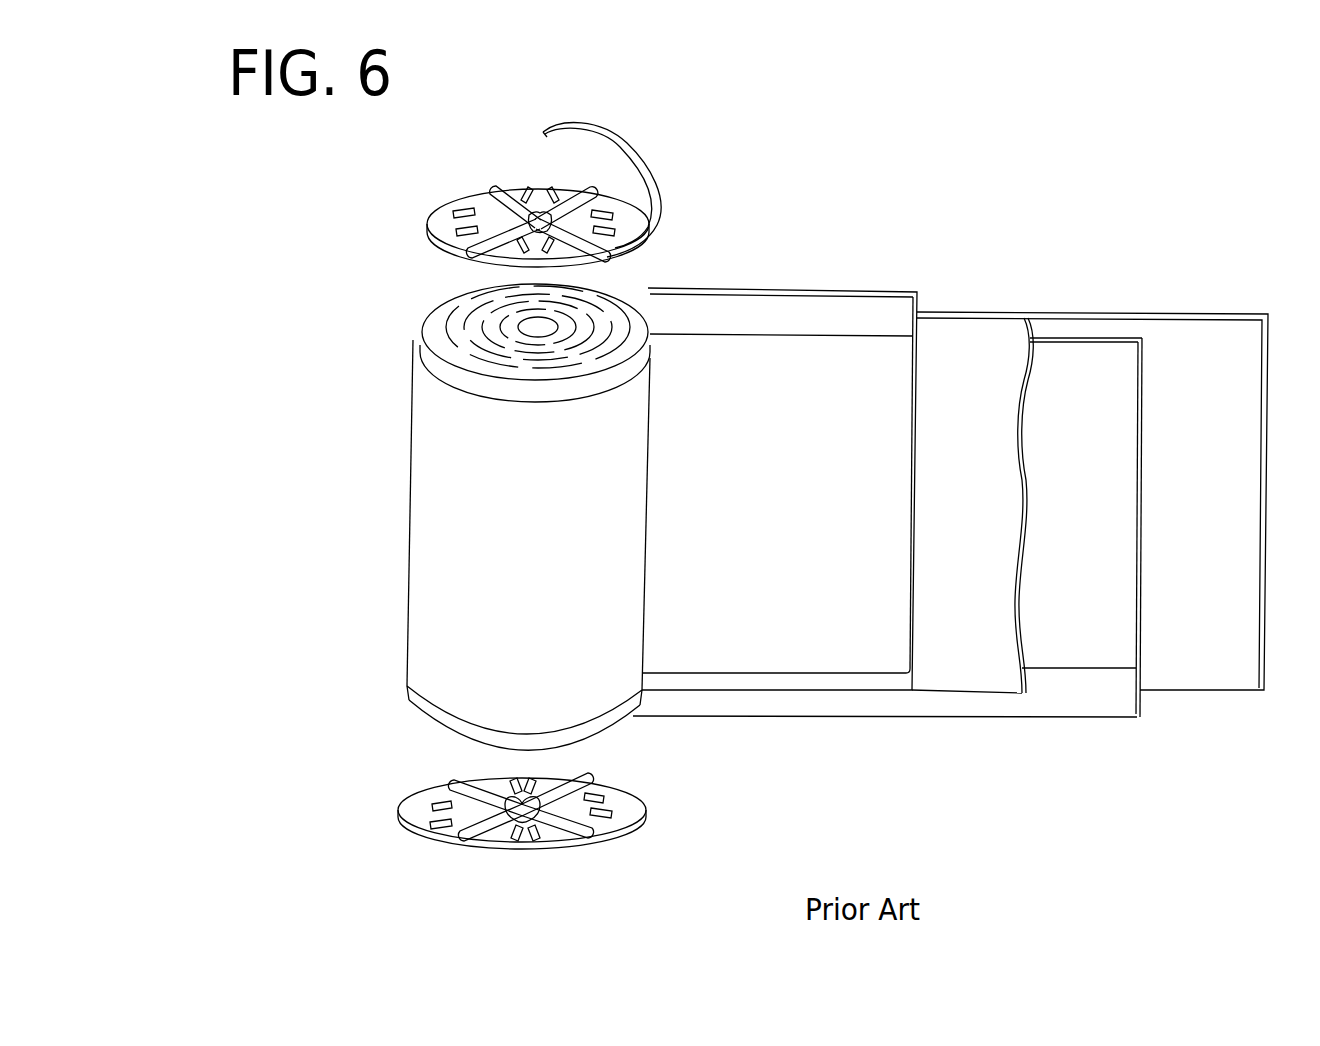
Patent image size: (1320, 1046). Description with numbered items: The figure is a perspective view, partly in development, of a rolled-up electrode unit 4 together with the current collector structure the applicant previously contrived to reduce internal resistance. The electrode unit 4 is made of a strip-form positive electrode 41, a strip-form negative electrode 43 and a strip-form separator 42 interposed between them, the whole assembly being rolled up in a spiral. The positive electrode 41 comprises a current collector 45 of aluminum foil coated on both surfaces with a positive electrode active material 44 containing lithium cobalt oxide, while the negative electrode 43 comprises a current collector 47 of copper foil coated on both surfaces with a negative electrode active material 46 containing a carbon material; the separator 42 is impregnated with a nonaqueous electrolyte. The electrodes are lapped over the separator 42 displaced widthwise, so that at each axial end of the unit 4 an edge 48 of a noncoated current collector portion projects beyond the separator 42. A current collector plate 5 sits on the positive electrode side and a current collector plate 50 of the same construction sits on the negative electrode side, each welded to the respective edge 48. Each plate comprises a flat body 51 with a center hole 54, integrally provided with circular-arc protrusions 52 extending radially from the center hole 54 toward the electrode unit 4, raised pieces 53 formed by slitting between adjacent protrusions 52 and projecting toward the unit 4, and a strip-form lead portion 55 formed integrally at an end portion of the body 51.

The rolled-up electrode unit 4 is at (427, 534).
The current collector plate 5 is at (427, 214).
The positive electrode 41 is at (905, 368).
The separator 42 is at (996, 345).
The negative electrode 43 is at (1100, 365).
The positive electrode active material 44 is at (808, 658).
The current collector 45 is at (866, 315).
The negative electrode active material 46 is at (1098, 637).
The current collector 47 is at (1087, 690).
The edge 48 is at (790, 290).
The current collector plate 50 is at (630, 805).
The flat body 51 is at (433, 233).
The circular-arc protrusion 52 is at (490, 193).
The raised piece 53 is at (458, 208).
The center hole 54 is at (536, 210).
The lead portion 55 is at (637, 165).